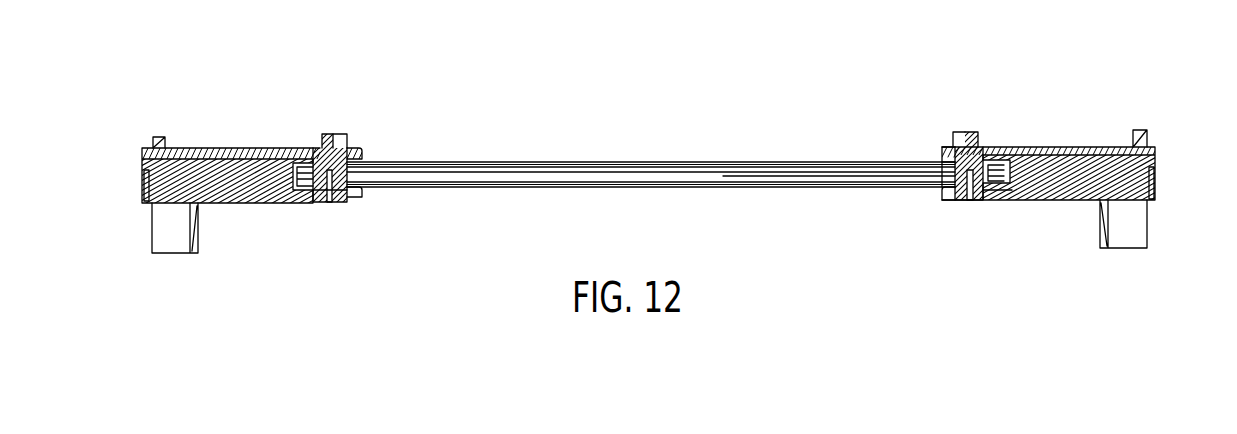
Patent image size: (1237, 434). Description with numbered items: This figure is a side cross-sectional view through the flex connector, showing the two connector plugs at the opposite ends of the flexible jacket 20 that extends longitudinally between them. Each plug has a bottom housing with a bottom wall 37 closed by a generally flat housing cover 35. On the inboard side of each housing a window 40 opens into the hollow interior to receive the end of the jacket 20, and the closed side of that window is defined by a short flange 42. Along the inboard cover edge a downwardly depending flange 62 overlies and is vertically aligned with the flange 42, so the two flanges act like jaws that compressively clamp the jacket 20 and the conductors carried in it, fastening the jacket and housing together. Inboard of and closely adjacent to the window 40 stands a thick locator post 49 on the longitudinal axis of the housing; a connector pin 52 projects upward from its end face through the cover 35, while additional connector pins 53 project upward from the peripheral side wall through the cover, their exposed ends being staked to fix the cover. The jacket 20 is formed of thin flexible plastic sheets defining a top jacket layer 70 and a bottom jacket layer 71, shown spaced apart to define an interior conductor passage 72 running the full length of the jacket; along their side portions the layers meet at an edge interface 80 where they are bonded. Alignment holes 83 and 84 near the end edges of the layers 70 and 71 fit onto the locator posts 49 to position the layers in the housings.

The jacket 20 is at (690, 162).
The housing cover 35 is at (258, 149).
The bottom wall 37 is at (1027, 198).
The window 40 is at (941, 188).
The flange 42 is at (358, 191).
The locator post 49 is at (323, 203).
The connector pin 52 is at (326, 137).
The connector pins 53 is at (160, 137).
The flange 62 is at (350, 158).
The top jacket layer 70 is at (615, 162).
The bottom jacket layer 71 is at (590, 187).
The conductor passage 72 is at (720, 176).
The edge interface 80 is at (753, 174).
The alignment hole 83 is at (322, 151).
The alignment hole 84 is at (340, 202).